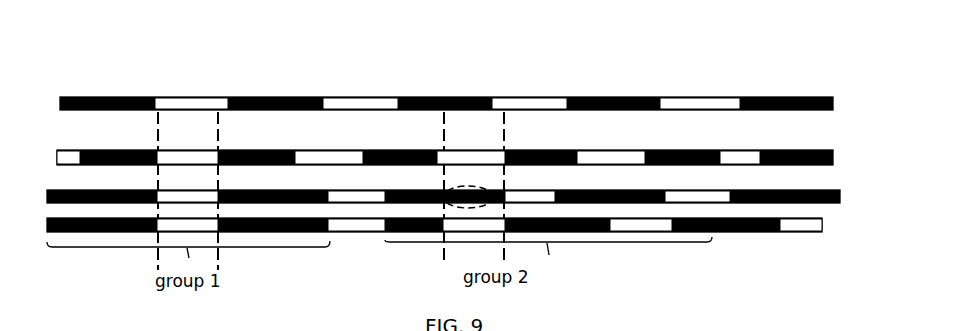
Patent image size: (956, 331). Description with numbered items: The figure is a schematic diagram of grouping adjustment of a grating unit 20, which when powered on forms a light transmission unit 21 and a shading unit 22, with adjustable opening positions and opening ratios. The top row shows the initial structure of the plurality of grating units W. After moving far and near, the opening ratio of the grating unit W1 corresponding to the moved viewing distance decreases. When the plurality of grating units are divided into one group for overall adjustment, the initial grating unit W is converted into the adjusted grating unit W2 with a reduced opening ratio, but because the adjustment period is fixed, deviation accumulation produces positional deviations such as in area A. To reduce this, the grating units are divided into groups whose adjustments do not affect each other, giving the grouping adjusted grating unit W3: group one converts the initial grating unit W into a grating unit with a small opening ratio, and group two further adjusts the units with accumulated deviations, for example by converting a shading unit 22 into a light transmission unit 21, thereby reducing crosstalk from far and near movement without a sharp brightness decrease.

The grating unit 20 is at (175, 63).
The light transmission unit 21 is at (187, 104).
The shading unit 22 is at (126, 100).
The area A is at (468, 188).
The initial grating units W is at (426, 104).
The grating unit corresponding to moved viewing distance W1 is at (424, 159).
The adjusted grating unit W2 is at (427, 198).
The grouping adjusted grating unit W3 is at (418, 226).